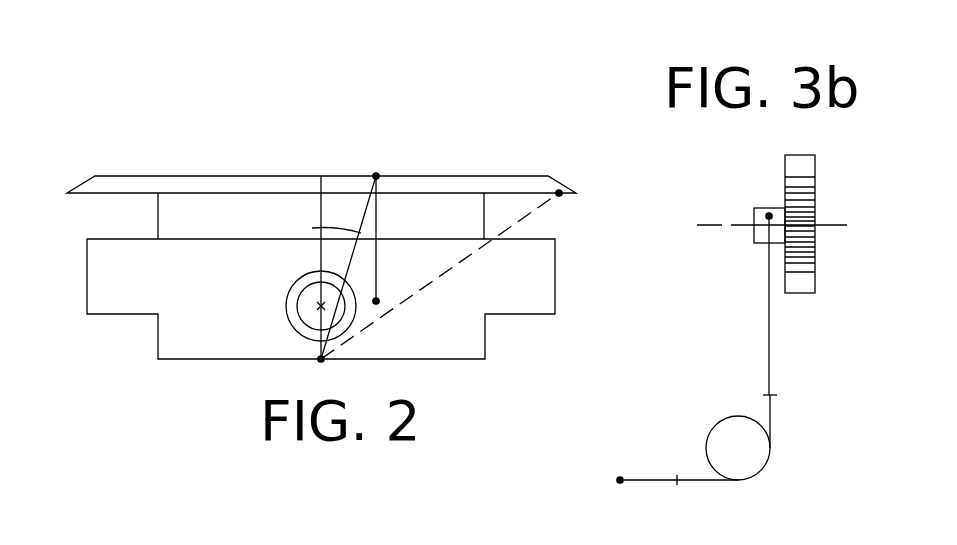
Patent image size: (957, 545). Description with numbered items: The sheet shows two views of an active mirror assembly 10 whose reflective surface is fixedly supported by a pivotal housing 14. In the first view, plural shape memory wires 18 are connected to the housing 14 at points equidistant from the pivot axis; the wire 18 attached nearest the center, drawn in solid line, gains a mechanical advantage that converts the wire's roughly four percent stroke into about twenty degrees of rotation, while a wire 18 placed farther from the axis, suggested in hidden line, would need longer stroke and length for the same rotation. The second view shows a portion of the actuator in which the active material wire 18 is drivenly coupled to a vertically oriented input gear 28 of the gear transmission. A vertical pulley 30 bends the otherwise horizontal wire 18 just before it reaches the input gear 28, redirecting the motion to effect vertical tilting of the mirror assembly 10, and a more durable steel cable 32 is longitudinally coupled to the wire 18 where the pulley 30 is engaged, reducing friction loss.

In FIG. 2, the active mirror assembly 10 is at (321, 217).
In FIG. 2, the housing 14 is at (518, 177).
In FIG. 2, the active material element 18 is at (377, 207).
In FIG. 3b, the active material element 18 is at (770, 332).
In FIG. 3b, the input gear 28 is at (785, 176).
In FIG. 3b, the pulley 30 is at (712, 445).
In FIG. 3b, the steel cable 32 is at (770, 416).